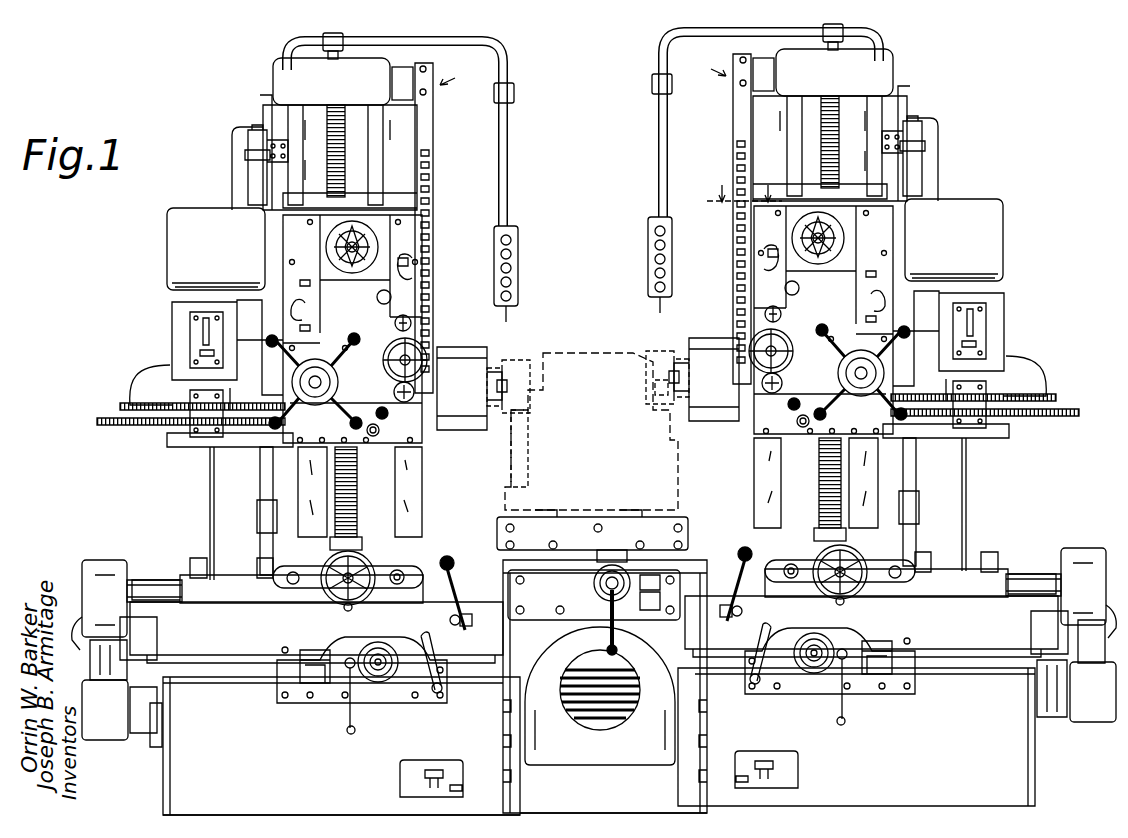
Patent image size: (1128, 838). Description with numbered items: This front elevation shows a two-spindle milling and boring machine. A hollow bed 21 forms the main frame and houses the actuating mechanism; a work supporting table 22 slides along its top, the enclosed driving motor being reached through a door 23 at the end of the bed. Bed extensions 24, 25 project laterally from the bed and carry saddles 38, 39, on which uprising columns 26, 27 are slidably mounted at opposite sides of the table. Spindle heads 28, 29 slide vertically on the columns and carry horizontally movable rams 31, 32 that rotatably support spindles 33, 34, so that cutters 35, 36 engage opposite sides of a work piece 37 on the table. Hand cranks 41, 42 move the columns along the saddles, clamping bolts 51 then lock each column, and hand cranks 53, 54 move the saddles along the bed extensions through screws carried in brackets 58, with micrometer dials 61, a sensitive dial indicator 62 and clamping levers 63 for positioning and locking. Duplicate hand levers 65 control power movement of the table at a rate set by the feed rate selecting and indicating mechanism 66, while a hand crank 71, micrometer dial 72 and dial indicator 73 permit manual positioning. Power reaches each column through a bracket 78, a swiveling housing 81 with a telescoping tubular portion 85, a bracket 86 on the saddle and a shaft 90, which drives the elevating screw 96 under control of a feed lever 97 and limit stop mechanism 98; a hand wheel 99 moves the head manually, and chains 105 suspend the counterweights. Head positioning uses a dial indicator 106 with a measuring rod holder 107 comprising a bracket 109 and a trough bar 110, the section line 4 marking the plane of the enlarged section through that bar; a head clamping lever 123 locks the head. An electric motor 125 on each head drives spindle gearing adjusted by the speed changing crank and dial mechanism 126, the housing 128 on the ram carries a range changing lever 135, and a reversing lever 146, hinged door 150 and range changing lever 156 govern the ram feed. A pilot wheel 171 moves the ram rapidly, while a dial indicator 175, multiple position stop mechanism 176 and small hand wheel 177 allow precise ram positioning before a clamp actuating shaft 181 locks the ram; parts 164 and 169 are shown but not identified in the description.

The bed 21 is at (668, 777).
The work supporting table 22 is at (497, 530).
The door 23 is at (530, 672).
The bed extension 24 is at (185, 788).
The bed extension 25 is at (1015, 770).
The column 26 is at (283, 75).
The column 27 is at (890, 63).
The cutter spindle-head 28 is at (417, 222).
The cutter spindle-head 29 is at (738, 280).
The spindle carrying ram 31 is at (468, 334).
The spindle carrying ram 32 is at (710, 340).
The cutter driving spindle 33 is at (497, 360).
The cutter driving spindle 34 is at (690, 360).
The cutter 35 is at (531, 448).
The cutter 36 is at (655, 386).
The work piece 37 is at (586, 365).
The saddle 38 is at (205, 627).
The saddle 39 is at (980, 615).
The hand crank 41 is at (75, 625).
The hand crank 42 is at (1112, 615).
The section line 4 is at (742, 187).
The clamping bolts 51 is at (199, 557).
The hand crank 53 is at (350, 733).
The hand crank 54 is at (840, 722).
The bracket 58 is at (300, 703).
The micrometer dial 61 is at (378, 645).
The sensitive dial indicator 62 is at (880, 642).
The clamping lever 63 is at (428, 645).
The hand levers 65 is at (448, 563).
The feed rate selecting and indicating mechanism 66 is at (452, 622).
The hand crank 71 is at (607, 637).
The micrometer dial 72 is at (594, 583).
The dial indicator 73 is at (605, 560).
The bracket 78 is at (150, 740).
The housing 81 is at (118, 720).
The tubular portion 85 is at (100, 670).
The bracket 86 is at (117, 560).
The shaft 90 is at (140, 585).
The elevating screw 96 is at (356, 500).
The feed lever 97 is at (404, 570).
The limit stop mechanism 98 is at (260, 490).
The hand wheel 99 is at (362, 555).
The chains 105 is at (362, 122).
The sensitive dial indicator 106 is at (395, 323).
The measuring rod holder 107 is at (583, 77).
The bracket 109 is at (415, 68).
The rod carrying bar or trough 110 is at (433, 100).
The head clamping lever 123 is at (265, 280).
The electric motor 125 is at (197, 212).
The speed changing crank and indicating dial mechanism 126 is at (350, 212).
The housing 128 is at (172, 313).
The range changing lever 135 is at (208, 310).
The reversing lever 146 is at (302, 283).
The hinged door 150 is at (392, 296).
The range changing lever 156 is at (412, 262).
The pin 164 is at (380, 430).
The handwheel 169 is at (275, 372).
The pilot wheel 171 is at (350, 422).
The dial indicator 175 is at (404, 403).
The multiple position stop mechanism 176 is at (208, 440).
The small hand wheel 177 is at (430, 362).
The clamp actuating shaft 181 is at (378, 440).